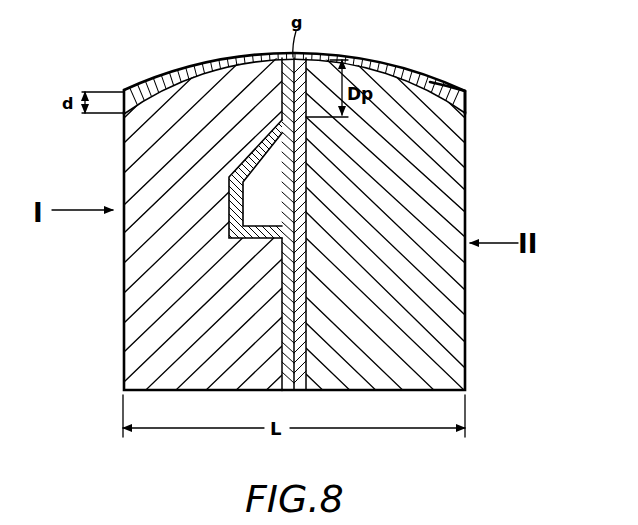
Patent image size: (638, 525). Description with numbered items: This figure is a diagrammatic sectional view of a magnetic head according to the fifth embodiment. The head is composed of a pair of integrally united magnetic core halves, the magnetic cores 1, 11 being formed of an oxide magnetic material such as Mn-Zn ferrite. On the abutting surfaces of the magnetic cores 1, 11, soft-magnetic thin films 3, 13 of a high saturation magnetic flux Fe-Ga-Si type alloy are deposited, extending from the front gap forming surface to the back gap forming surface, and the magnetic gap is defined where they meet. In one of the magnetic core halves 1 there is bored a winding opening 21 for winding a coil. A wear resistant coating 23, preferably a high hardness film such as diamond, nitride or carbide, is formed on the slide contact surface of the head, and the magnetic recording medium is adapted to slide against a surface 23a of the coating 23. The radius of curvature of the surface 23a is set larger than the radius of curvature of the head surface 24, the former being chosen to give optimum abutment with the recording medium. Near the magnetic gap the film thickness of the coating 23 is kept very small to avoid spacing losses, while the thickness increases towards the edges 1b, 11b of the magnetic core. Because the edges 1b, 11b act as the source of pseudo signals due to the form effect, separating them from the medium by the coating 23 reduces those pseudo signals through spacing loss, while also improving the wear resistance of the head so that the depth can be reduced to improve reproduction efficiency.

The magnetic core 1 is at (137, 302).
The edge of the magnetic core 1b is at (123, 115).
The soft-magnetic thin film 3 is at (284, 360).
The magnetic core 11 is at (463, 312).
The edge of the magnetic core 11b is at (467, 122).
The soft-magnetic thin film 13 is at (302, 360).
The winding opening 21 is at (236, 208).
The wear resistant coating 23 is at (373, 60).
The surface of the coating 23a is at (418, 70).
The head surface 24 is at (448, 84).